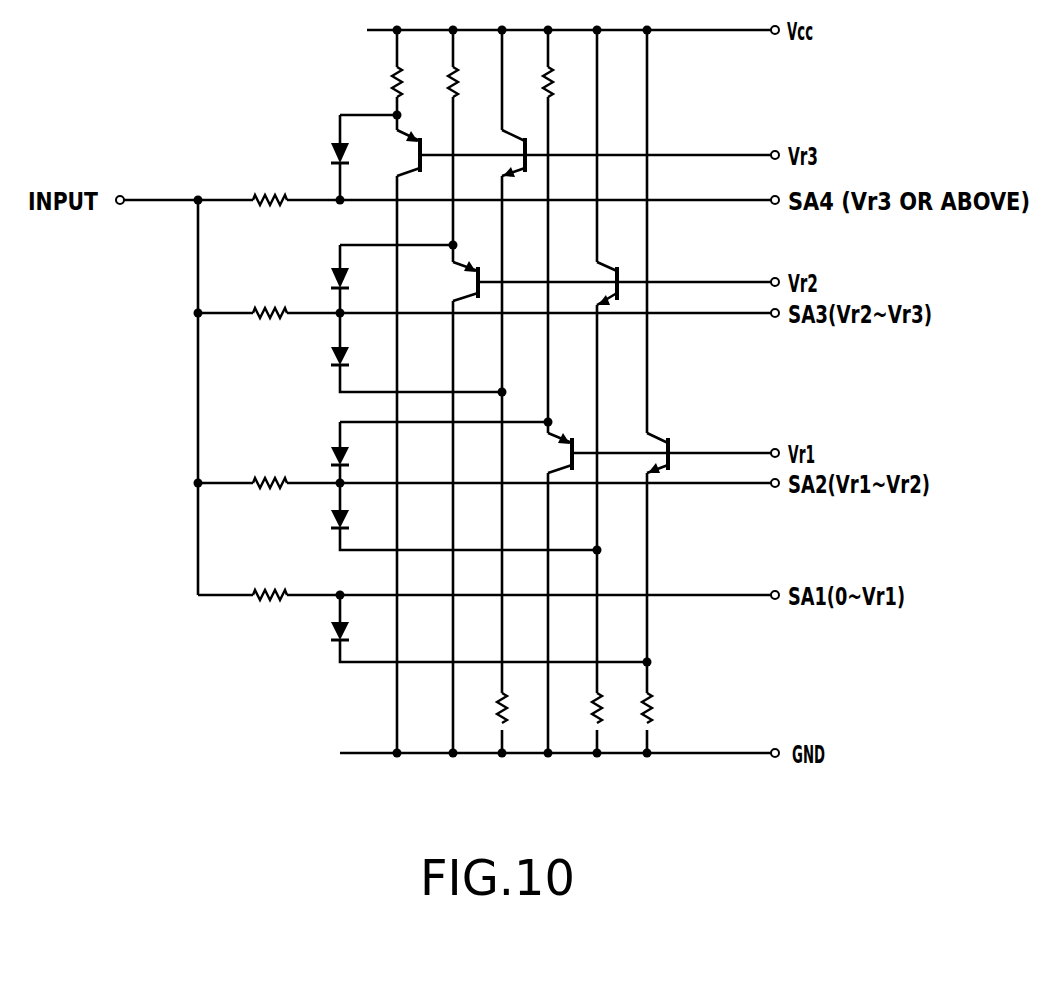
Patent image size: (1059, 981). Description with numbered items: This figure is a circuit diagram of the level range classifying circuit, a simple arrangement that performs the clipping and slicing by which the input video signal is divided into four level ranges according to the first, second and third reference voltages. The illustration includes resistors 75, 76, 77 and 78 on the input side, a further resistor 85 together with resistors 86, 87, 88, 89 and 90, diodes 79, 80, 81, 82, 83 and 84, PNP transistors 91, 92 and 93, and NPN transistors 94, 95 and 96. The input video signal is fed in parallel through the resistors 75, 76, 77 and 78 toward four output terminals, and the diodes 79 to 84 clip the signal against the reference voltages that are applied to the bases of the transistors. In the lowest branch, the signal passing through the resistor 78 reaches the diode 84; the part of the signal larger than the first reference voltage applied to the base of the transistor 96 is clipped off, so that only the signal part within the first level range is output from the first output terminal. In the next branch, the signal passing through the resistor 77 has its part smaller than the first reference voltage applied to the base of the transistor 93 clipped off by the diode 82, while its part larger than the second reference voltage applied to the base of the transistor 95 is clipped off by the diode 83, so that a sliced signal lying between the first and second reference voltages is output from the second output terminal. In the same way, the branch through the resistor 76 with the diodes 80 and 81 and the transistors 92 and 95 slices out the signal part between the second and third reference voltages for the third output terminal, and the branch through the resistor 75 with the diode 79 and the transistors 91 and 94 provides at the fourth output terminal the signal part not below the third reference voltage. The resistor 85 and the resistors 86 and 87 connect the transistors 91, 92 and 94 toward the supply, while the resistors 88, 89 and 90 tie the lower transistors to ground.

The resistor 75 is at (265, 210).
The resistor 76 is at (265, 323).
The resistor 77 is at (266, 488).
The resistor 78 is at (264, 603).
The diode 79 is at (331, 152).
The diode 80 is at (333, 278).
The diode 81 is at (332, 355).
The diode 82 is at (334, 456).
The diode 83 is at (332, 520).
The diode 84 is at (332, 634).
The resistor 85 is at (391, 77).
The resistor 86 is at (449, 76).
The resistor 87 is at (544, 76).
The resistor 88 is at (508, 710).
The resistor 89 is at (603, 710).
The resistor 90 is at (655, 709).
The PNP transistor 91 is at (427, 161).
The PNP transistor 92 is at (468, 264).
The PNP transistor 93 is at (560, 437).
The NPN transistor 94 is at (526, 161).
The NPN transistor 95 is at (608, 264).
The NPN transistor 96 is at (662, 437).